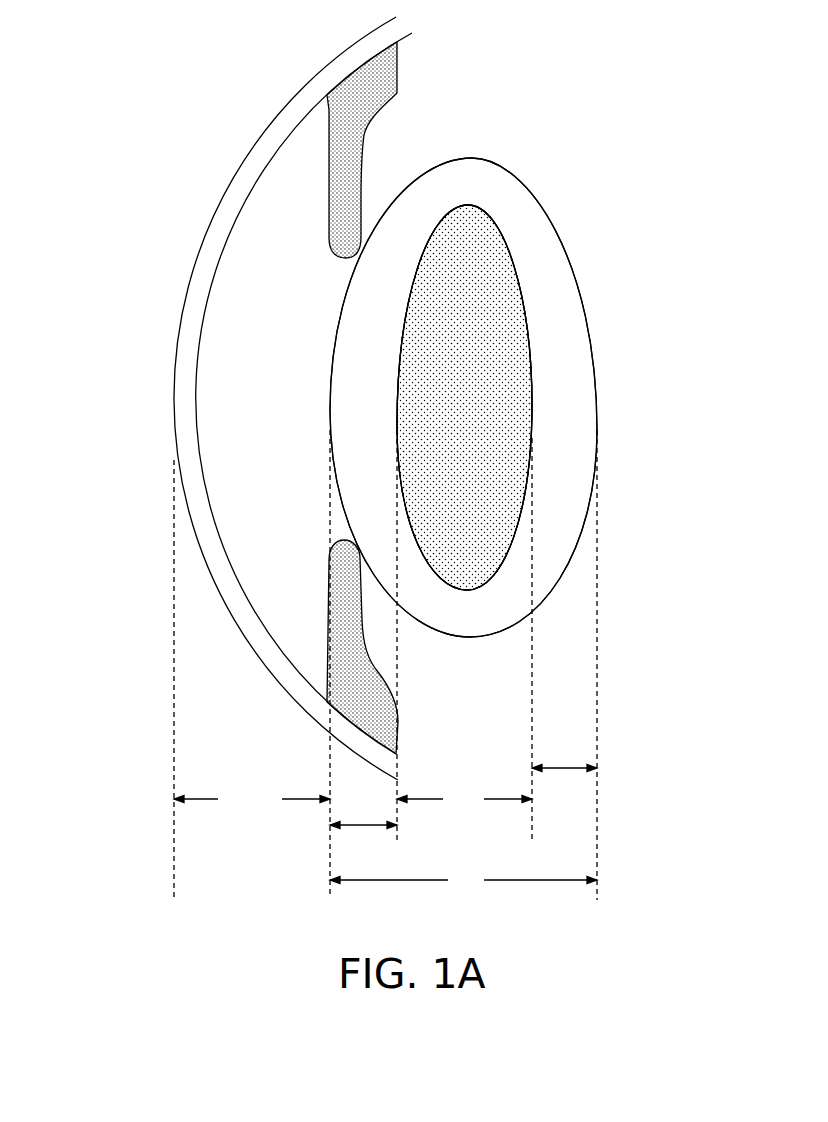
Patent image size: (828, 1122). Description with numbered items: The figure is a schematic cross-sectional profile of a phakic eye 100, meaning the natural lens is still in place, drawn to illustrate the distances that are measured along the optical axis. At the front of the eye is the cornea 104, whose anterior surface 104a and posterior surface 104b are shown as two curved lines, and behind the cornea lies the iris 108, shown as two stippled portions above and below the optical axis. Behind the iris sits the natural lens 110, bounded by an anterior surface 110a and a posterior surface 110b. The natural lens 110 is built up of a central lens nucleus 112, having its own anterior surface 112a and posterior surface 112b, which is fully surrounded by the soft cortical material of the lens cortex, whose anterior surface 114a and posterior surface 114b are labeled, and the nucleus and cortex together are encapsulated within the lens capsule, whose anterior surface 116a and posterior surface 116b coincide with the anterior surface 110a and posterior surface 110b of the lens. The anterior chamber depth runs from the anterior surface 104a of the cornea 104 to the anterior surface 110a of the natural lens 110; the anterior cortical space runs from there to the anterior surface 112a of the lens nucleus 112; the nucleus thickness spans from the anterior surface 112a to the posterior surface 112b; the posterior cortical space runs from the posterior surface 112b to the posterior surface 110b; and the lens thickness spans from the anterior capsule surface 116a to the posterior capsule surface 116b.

The phakic eye 100 is at (157, 698).
The cornea 104 is at (83, 272).
The anterior surface of the cornea 104a is at (183, 303).
The posterior corneal surface 104b is at (202, 339).
The iris 108 is at (327, 177).
The natural lens 110 is at (665, 95).
The anterior surface of the natural lens 110a is at (333, 470).
The posterior surface of the natural lens 110b is at (594, 341).
The lens nucleus 112 is at (488, 332).
The anterior surface of the lens nucleus 112a is at (397, 436).
The posterior surface of the lens nucleus 112b is at (533, 402).
The anterior surface of the lens cortex 114a is at (375, 292).
The posterior surface of the lens cortex 114b is at (535, 260).
The anterior surface of the lens capsule 116a is at (407, 212).
The posterior surface of the lens capsule 116b is at (508, 177).